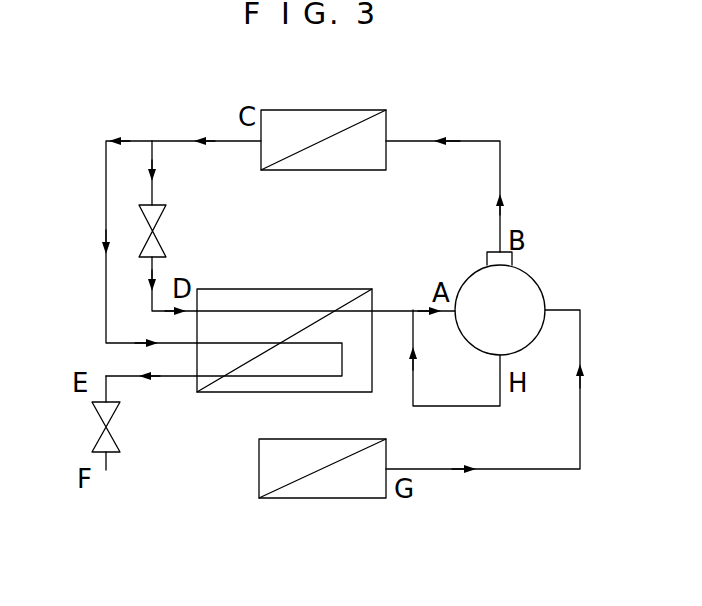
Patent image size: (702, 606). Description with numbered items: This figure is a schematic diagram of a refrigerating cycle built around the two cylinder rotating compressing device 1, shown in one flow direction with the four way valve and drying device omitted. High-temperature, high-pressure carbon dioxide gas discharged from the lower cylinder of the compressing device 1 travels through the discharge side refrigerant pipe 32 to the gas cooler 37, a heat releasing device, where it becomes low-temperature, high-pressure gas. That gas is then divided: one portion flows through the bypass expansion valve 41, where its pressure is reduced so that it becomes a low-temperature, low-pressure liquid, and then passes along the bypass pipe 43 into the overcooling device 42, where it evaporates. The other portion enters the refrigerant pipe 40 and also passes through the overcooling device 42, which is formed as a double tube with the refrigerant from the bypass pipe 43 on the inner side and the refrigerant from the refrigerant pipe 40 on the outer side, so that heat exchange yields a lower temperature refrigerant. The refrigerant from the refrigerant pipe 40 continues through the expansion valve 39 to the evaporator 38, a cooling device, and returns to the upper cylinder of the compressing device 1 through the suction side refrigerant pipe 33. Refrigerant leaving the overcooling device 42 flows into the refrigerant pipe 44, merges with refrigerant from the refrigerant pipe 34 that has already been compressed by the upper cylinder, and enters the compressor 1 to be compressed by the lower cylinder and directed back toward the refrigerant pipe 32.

The two cylinder rotating compressing device 1 is at (533, 296).
The discharge side refrigerant pipe 32 is at (500, 181).
The suction side refrigerant pipe 33 is at (580, 341).
The refrigerant pipe 34 is at (455, 406).
The gas cooler 37 is at (356, 110).
The evaporator 38 is at (325, 498).
The expansion valve 39 is at (106, 418).
The refrigerant pipe 40 is at (106, 182).
The bypass expansion valve 41 is at (162, 220).
The overcooling device 42 is at (312, 260).
The bypass pipe 43 is at (152, 314).
The refrigerant pipe 44 is at (400, 311).